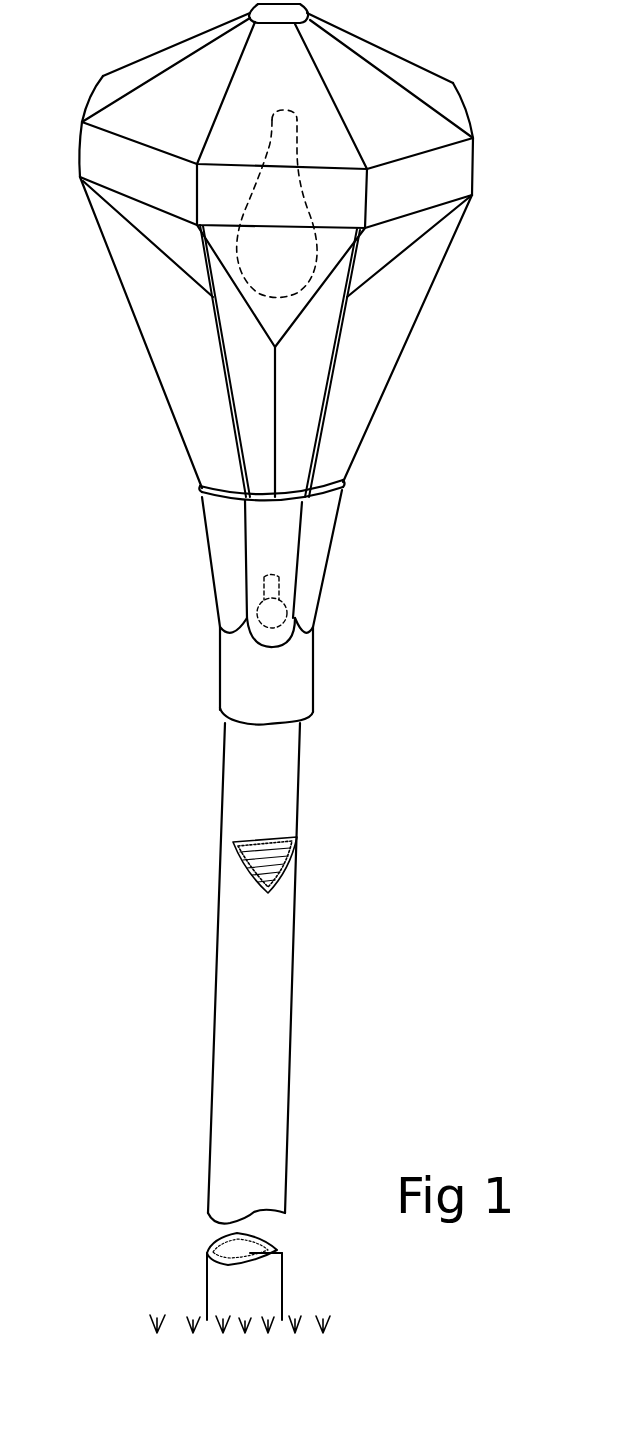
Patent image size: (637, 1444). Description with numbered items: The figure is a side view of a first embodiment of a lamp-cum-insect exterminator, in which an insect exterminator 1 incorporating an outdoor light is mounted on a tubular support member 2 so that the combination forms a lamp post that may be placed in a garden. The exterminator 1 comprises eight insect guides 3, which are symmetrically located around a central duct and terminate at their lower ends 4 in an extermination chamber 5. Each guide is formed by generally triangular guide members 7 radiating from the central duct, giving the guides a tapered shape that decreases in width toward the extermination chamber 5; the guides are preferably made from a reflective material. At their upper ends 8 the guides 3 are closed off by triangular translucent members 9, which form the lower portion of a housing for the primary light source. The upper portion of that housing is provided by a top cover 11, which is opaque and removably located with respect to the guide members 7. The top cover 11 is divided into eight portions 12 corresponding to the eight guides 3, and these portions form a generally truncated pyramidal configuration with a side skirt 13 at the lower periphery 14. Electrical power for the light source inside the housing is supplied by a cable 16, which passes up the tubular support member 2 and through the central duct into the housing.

The insect exterminator 1 is at (395, 503).
The tubular support member 2 is at (310, 1040).
The insect guides 3 is at (375, 345).
The lower ends 4 is at (347, 473).
The extermination chamber 5 is at (332, 567).
The guide members 7 is at (427, 287).
The upper ends 8 is at (348, 250).
The triangular translucent members 9 is at (155, 225).
The top cover 11 is at (413, 73).
The portions 12 is at (393, 125).
The side skirt 13 is at (473, 163).
The lower periphery 14 is at (127, 140).
The cable 16 is at (223, 1247).